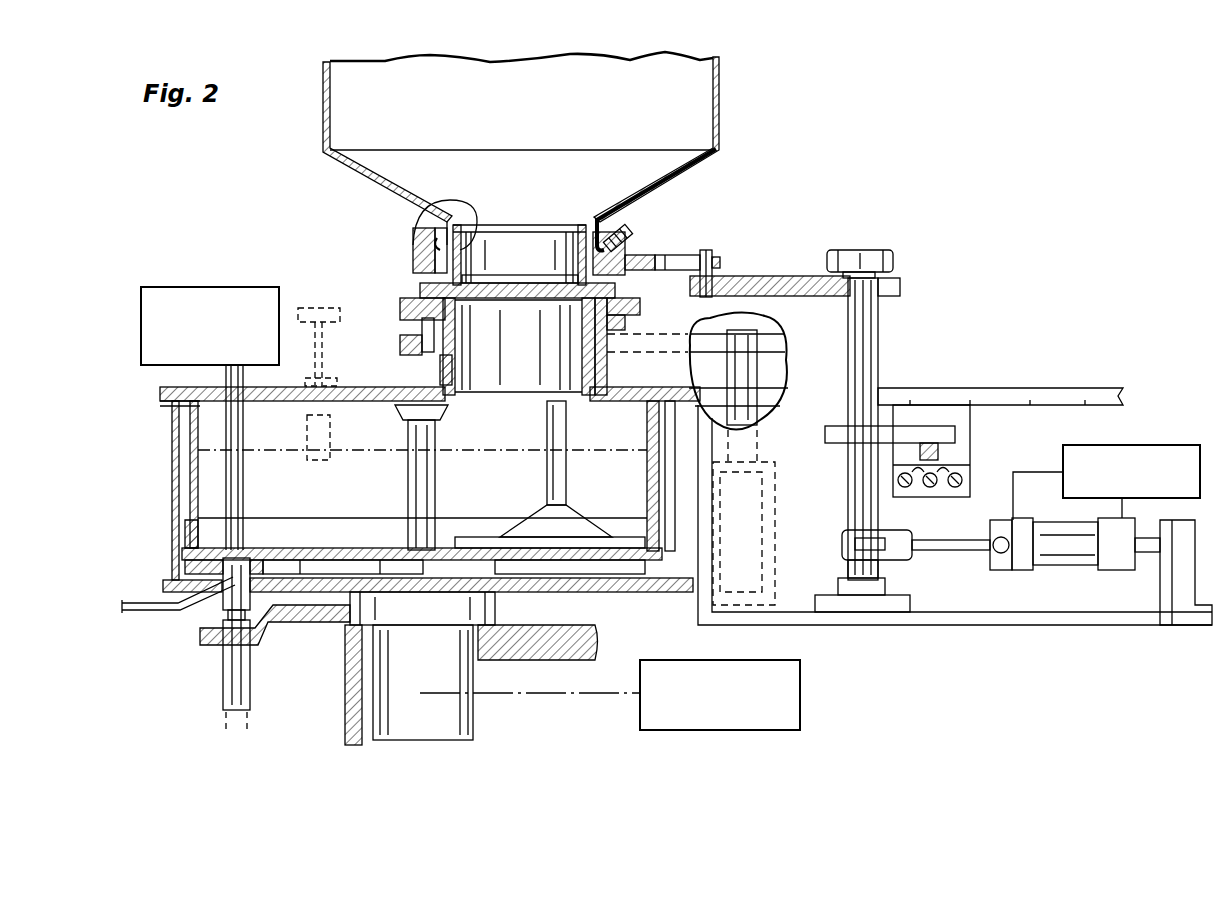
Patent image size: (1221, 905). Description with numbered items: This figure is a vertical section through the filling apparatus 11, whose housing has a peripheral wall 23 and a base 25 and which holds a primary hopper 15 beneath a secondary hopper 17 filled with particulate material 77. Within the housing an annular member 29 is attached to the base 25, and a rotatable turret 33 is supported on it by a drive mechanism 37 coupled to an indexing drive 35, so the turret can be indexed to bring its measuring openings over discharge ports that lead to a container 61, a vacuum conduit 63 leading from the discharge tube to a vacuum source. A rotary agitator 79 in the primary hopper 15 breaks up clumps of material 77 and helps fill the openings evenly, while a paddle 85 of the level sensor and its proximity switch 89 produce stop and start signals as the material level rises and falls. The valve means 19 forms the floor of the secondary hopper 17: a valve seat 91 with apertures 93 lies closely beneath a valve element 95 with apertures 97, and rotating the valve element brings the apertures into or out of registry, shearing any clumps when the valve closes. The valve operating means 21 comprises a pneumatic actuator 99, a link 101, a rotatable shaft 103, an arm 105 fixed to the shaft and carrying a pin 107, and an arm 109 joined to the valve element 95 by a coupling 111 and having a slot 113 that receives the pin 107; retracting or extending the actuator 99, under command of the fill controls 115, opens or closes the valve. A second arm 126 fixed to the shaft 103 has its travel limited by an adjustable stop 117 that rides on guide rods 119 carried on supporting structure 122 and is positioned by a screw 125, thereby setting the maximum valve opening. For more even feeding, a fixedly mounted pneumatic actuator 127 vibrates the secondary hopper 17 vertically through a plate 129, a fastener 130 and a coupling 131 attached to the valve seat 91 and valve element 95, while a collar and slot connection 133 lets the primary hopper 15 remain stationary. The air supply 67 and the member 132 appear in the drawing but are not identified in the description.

The apparatus 11 is at (772, 32).
The secondary hopper 17 is at (323, 128).
The particulate material 77 is at (705, 110).
The valve element 95 is at (415, 222).
The valve means 19 is at (425, 282).
The apertures 97 is at (492, 275).
The coupling 111 is at (630, 250).
The arm 109 is at (690, 258).
The slot 113 is at (718, 252).
The pin 107 is at (712, 246).
The arm 105 is at (812, 262).
The valve operating means 21 is at (887, 251).
The rotatable shaft 103 is at (866, 340).
The proximity switch 89 is at (405, 302).
The valve seat 91 is at (617, 346).
The coupling 131 is at (404, 311).
The fastener 130 is at (400, 350).
The collar and slot connection 133 is at (433, 381).
The apertures 93 is at (555, 312).
The plate 129 is at (618, 360).
The top plate 132 is at (154, 399).
The air supply 67 is at (233, 288).
The paddle 85 is at (330, 432).
The primary hopper 15 is at (178, 457).
The peripheral wall 23 is at (178, 482).
The turret 33 is at (345, 555).
The rotary agitator 79 is at (470, 537).
The annular member 29 is at (190, 572).
The base 25 is at (140, 612).
The vacuum conduit 63 is at (182, 622).
The container 61 is at (230, 678).
The drive mechanism 37 is at (455, 722).
The indexing drive 35 is at (805, 700).
The pneumatic actuator 127 is at (775, 489).
The supporting structure 122 is at (1088, 388).
The arm 126 is at (920, 430).
The adjustable stop 117 is at (970, 455).
The guide rods 119 is at (970, 470).
The screw 125 is at (957, 490).
The link 101 is at (840, 545).
The pneumatic actuator 99 is at (1075, 560).
The fill controls 115 is at (1175, 420).